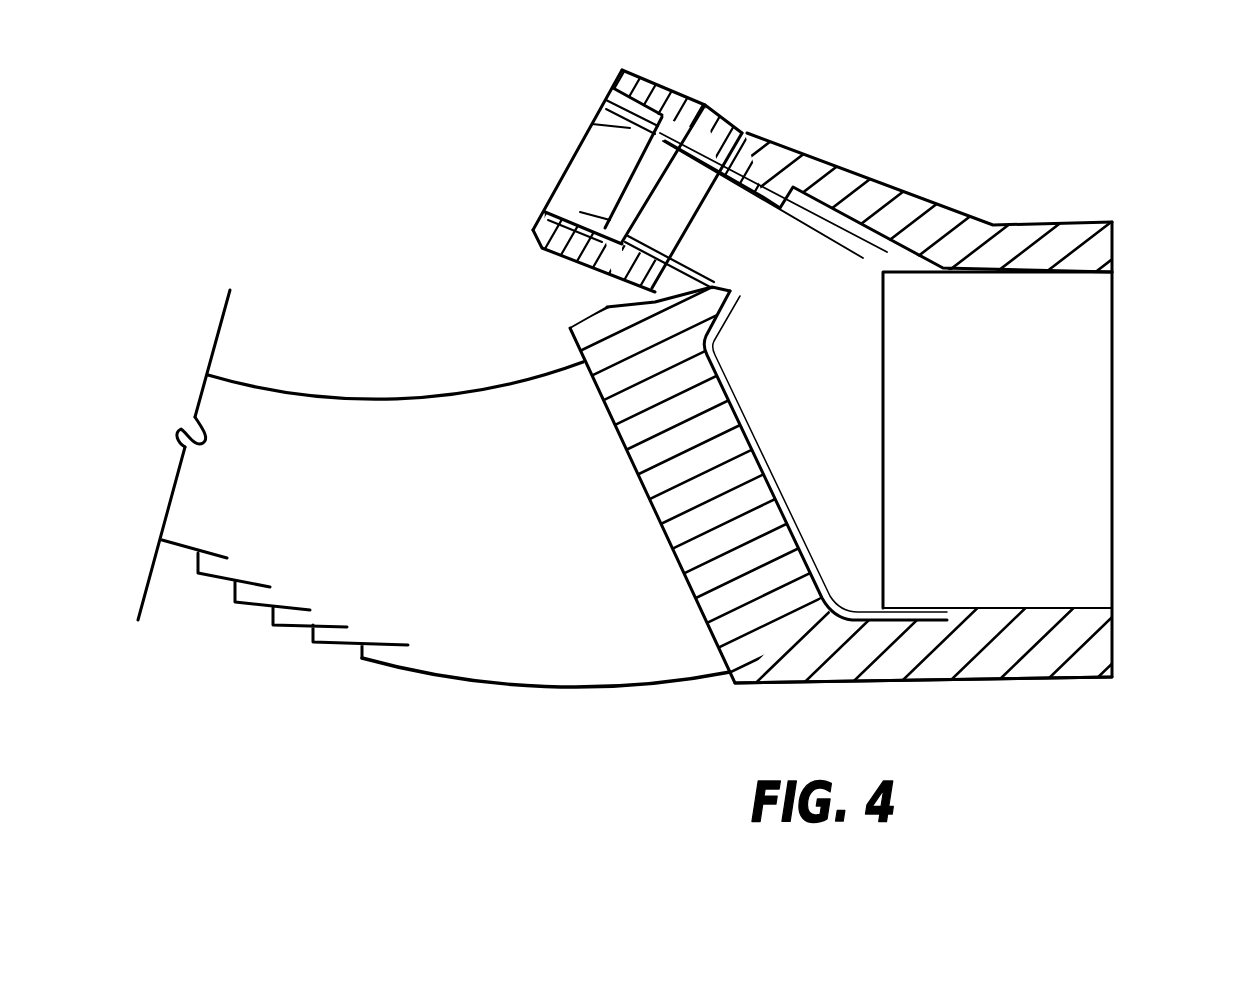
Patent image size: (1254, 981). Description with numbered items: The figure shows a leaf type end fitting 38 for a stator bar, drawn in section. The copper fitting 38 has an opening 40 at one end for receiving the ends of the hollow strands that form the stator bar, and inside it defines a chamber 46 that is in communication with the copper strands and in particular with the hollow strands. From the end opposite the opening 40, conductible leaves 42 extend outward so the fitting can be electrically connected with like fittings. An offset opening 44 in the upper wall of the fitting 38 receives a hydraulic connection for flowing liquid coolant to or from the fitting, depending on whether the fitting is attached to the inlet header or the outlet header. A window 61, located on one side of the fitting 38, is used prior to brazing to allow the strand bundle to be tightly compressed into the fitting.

The fitting 38 is at (923, 177).
The opening 40 is at (1077, 607).
The conductible leaves 42 is at (427, 397).
The offset opening 44 is at (606, 90).
The chamber 46 is at (836, 381).
The window 61 is at (1066, 424).